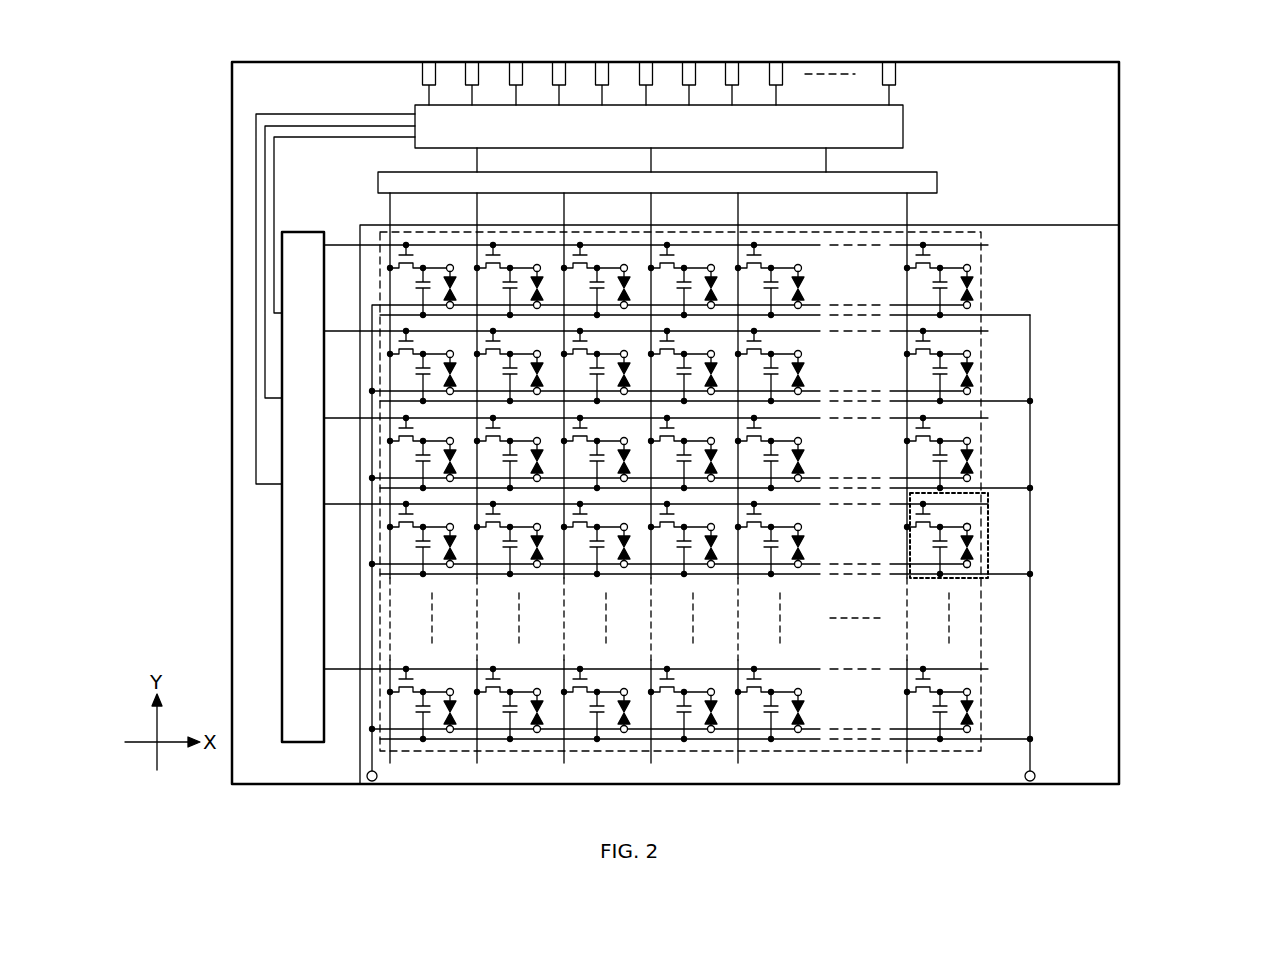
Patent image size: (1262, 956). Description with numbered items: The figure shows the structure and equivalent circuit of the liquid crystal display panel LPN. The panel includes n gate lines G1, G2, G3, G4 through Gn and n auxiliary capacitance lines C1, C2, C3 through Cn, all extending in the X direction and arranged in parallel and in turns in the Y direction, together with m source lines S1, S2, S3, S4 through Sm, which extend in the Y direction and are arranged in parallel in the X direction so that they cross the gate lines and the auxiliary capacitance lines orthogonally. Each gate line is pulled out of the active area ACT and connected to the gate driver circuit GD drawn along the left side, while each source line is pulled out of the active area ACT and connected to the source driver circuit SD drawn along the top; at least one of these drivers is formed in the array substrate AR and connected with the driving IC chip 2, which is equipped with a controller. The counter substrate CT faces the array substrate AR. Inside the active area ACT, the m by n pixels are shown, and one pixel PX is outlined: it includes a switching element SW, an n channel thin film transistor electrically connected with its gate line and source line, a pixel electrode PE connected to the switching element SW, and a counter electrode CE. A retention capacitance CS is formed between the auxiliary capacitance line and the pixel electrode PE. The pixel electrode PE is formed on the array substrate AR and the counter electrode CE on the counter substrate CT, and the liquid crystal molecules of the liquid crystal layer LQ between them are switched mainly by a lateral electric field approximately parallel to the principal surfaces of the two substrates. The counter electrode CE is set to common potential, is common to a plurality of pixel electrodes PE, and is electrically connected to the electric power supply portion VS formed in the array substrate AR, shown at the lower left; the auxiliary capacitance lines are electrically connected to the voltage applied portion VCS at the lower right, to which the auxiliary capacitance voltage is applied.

The driving IC chip 2 is at (903, 105).
The liquid crystal display panel LPN is at (1150, 77).
The counter substrate CT is at (1088, 225).
The array substrate AR is at (295, 784).
The source driver circuit SD is at (938, 181).
The gate driver circuit GD is at (282, 603).
The active area ACT is at (983, 352).
The gate line G1 is at (341, 244).
The gate line G2 is at (341, 330).
The gate line G3 is at (341, 417).
The gate line G4 is at (341, 503).
The gate line Gn is at (341, 668).
The source line S1 is at (393, 213).
The source line S2 is at (480, 213).
The source line S3 is at (567, 213).
The source line S4 is at (654, 213).
The source line Sm is at (910, 213).
The auxiliary capacitance line C1 is at (1007, 315).
The auxiliary capacitance line C2 is at (1007, 401).
The auxiliary capacitance line C3 is at (1007, 488).
The auxiliary capacitance line Cn is at (1007, 739).
The electric power supply portion VS is at (376, 779).
The voltage applied portion VCS is at (1035, 773).
The pixel PX is at (988, 578).
The switching element SW is at (912, 512).
The retention capacitance CS is at (934, 545).
The liquid crystal layer LQ is at (970, 541).
The pixel electrode PE is at (970, 526).
The counter electrode CE is at (970, 562).